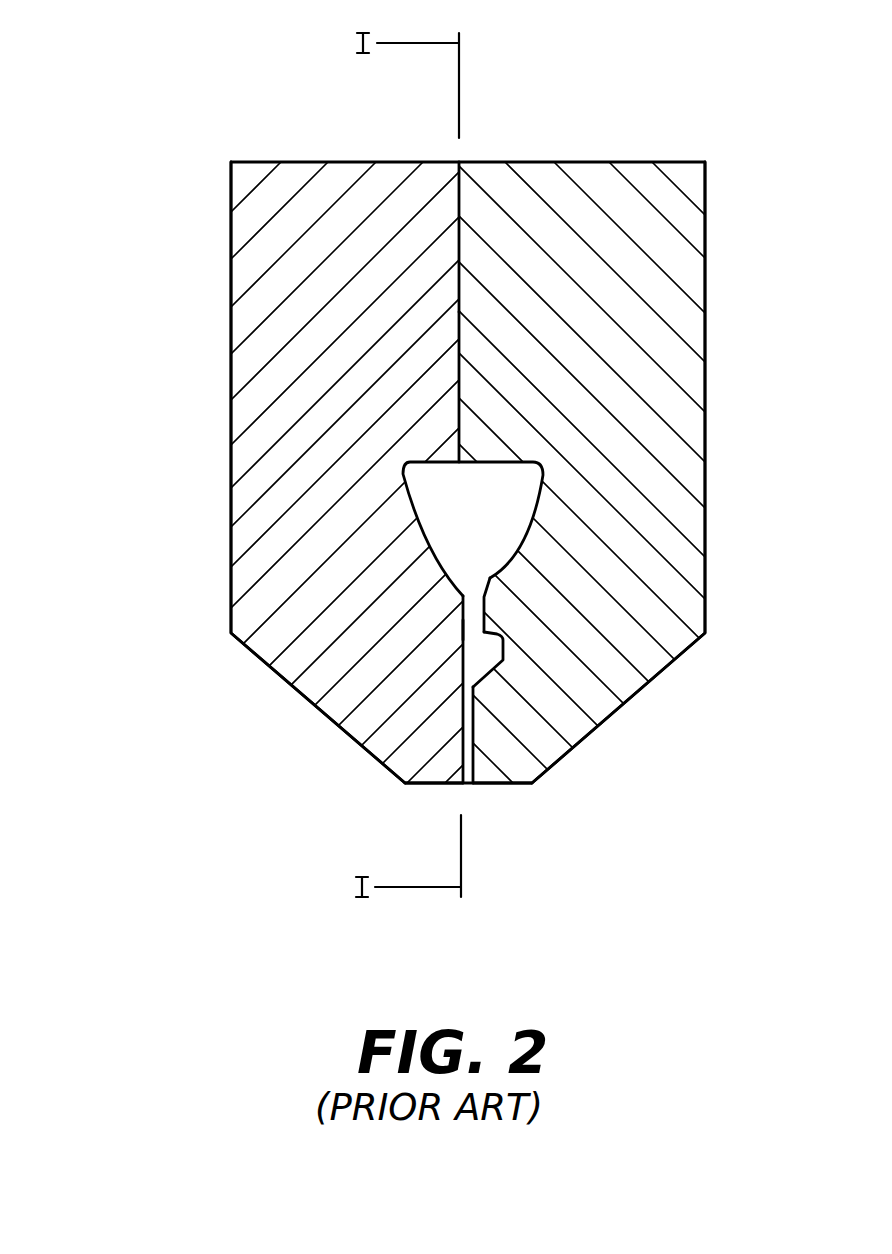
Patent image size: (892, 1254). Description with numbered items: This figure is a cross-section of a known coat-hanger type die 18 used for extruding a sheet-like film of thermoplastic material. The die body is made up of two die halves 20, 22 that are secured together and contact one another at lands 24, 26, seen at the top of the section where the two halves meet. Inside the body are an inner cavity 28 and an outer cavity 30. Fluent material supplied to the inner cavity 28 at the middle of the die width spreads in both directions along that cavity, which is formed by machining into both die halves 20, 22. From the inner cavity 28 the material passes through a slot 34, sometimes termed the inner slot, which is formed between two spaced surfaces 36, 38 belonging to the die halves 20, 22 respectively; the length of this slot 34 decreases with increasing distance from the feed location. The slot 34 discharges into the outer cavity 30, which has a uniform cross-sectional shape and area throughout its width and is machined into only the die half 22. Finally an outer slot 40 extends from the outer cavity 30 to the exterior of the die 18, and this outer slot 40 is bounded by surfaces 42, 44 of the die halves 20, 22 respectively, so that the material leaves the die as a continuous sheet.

The die 18 is at (145, 112).
The die half 20 is at (231, 259).
The die half 22 is at (705, 262).
The land 24 is at (458, 205).
The land 26 is at (470, 235).
The inner cavity 28 is at (473, 529).
The outer cavity 30 is at (503, 657).
The slot 34 is at (466, 643).
The surface 36 is at (470, 634).
The surface 38 is at (478, 596).
The outer slot 40 is at (473, 752).
The surface 42 is at (412, 786).
The surface 44 is at (473, 768).